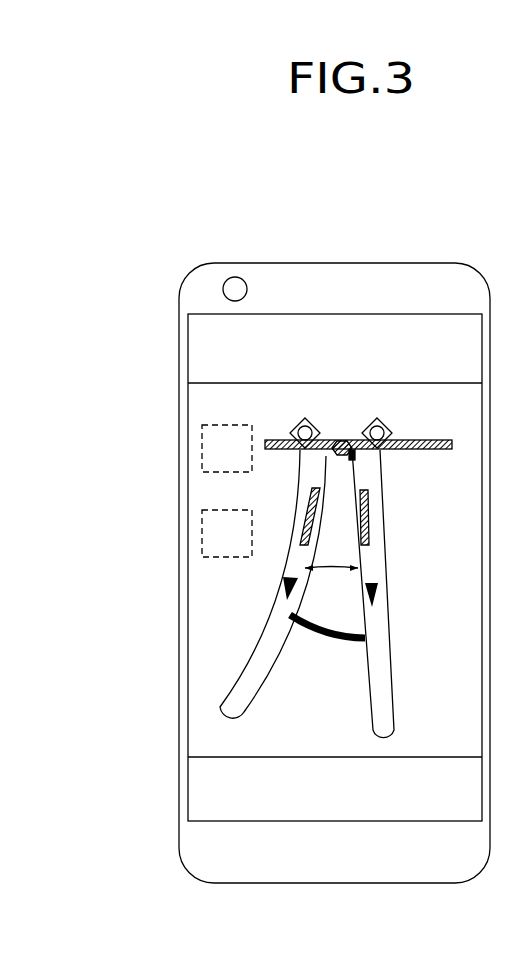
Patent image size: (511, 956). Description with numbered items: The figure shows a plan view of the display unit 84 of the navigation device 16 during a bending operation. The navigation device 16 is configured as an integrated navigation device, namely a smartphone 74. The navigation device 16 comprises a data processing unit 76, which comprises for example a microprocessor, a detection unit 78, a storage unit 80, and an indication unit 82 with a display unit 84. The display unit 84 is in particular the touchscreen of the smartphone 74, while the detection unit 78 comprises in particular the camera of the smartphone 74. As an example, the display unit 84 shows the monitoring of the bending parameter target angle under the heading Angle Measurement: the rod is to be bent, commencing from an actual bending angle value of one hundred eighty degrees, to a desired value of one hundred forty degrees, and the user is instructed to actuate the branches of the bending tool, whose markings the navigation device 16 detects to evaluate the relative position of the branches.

The navigation device 16 is at (333, 220).
The smartphone 74 is at (415, 285).
The detection unit 78 is at (233, 279).
The data processing unit 76 is at (202, 446).
The storage unit 80 is at (202, 531).
The indication unit 82 is at (203, 629).
The display unit 84 is at (203, 714).